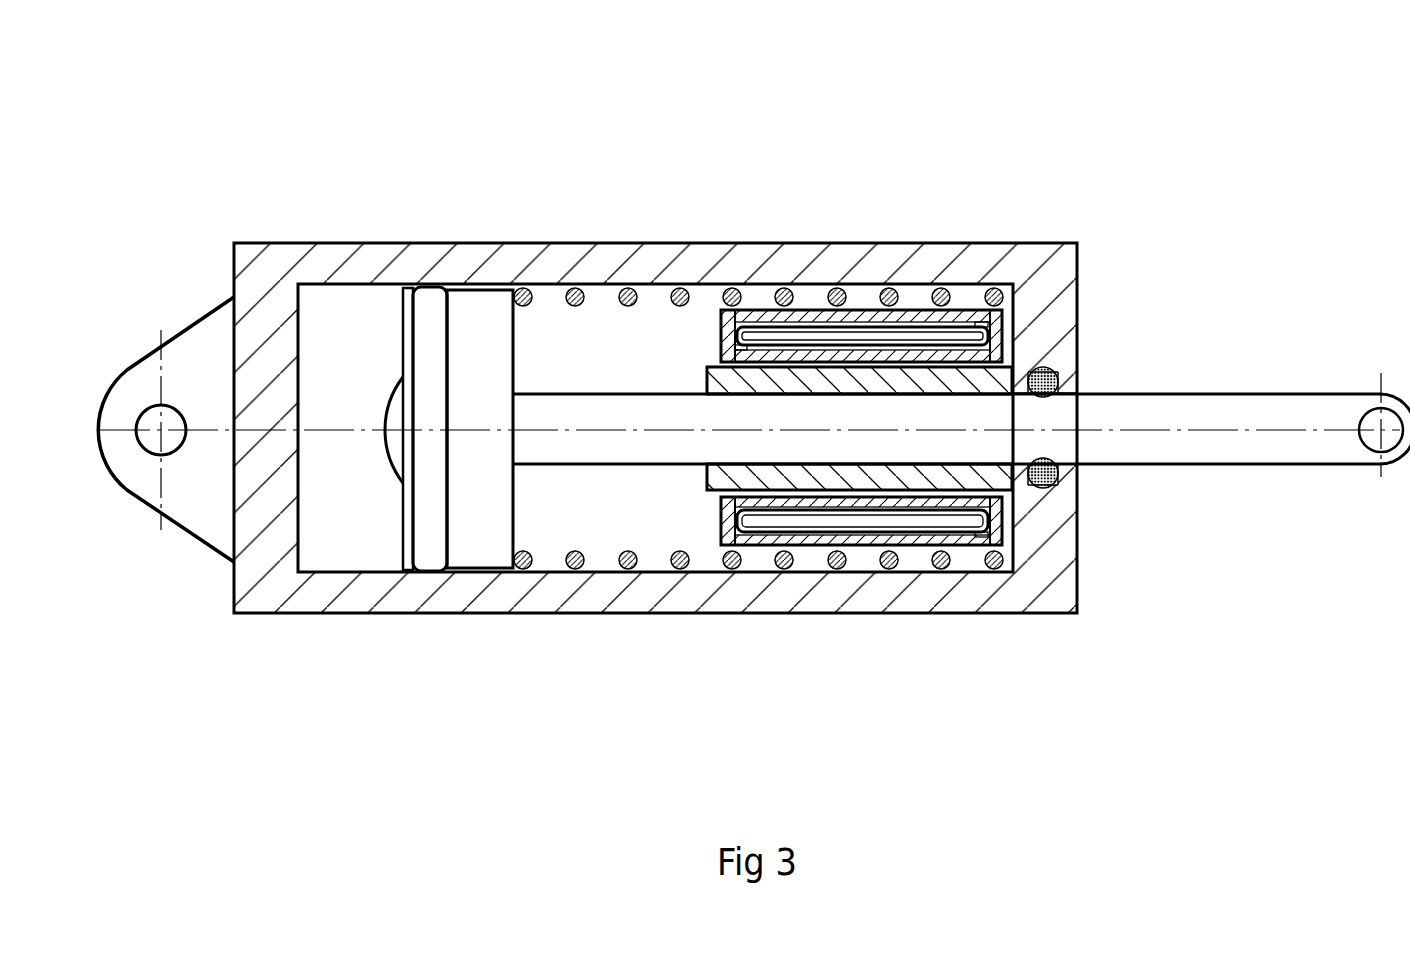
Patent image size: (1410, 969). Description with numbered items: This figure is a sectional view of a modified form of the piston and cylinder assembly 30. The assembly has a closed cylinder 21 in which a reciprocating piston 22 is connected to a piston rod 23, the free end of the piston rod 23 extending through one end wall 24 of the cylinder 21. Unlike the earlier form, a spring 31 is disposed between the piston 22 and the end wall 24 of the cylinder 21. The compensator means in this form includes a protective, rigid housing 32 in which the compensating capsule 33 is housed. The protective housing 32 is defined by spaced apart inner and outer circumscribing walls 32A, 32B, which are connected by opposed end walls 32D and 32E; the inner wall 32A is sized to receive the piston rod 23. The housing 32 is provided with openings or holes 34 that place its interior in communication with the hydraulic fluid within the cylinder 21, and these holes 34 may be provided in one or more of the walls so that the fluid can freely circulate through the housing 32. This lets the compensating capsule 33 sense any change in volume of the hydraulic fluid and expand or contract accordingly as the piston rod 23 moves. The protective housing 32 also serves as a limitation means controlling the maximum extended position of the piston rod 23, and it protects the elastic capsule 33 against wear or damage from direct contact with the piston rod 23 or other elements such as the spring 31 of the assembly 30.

The cylinder 21 is at (325, 262).
The piston 22 is at (402, 348).
The piston rod 23 is at (1298, 408).
The end wall 24 is at (1077, 487).
The piston and cylinder assembly 30 is at (573, 183).
The spring 31 is at (673, 284).
The protective housing 32 is at (827, 300).
The inner circumscribing wall 32A is at (772, 510).
The outer circumscribing wall 32B is at (815, 538).
The end wall 32D is at (1005, 525).
The end wall 32E is at (720, 520).
The compensating capsule 33 is at (960, 330).
The holes 34 is at (717, 320).